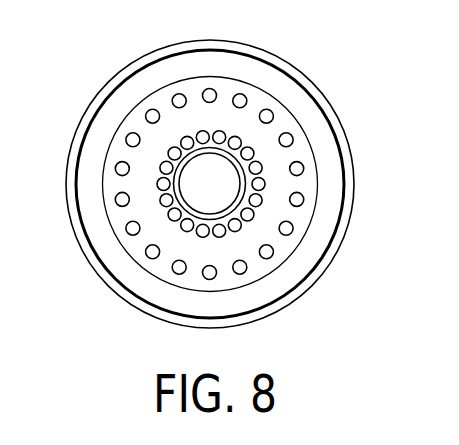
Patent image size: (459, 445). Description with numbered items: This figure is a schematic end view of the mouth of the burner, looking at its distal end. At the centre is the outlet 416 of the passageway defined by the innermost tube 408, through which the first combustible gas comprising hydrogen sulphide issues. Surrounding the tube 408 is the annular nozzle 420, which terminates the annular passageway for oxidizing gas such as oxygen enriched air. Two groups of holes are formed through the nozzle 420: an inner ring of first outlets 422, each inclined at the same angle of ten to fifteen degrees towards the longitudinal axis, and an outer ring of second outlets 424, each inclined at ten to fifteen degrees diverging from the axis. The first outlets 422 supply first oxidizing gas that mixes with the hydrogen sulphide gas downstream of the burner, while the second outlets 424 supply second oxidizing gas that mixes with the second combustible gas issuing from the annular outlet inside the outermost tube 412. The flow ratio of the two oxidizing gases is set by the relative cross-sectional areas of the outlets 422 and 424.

The tube 412 is at (277, 55).
The tube 408 is at (182, 217).
The outlet 416 is at (227, 196).
The annular nozzle 420 is at (166, 104).
The first outlets 422 is at (263, 167).
The second group of outlets 424 is at (277, 250).